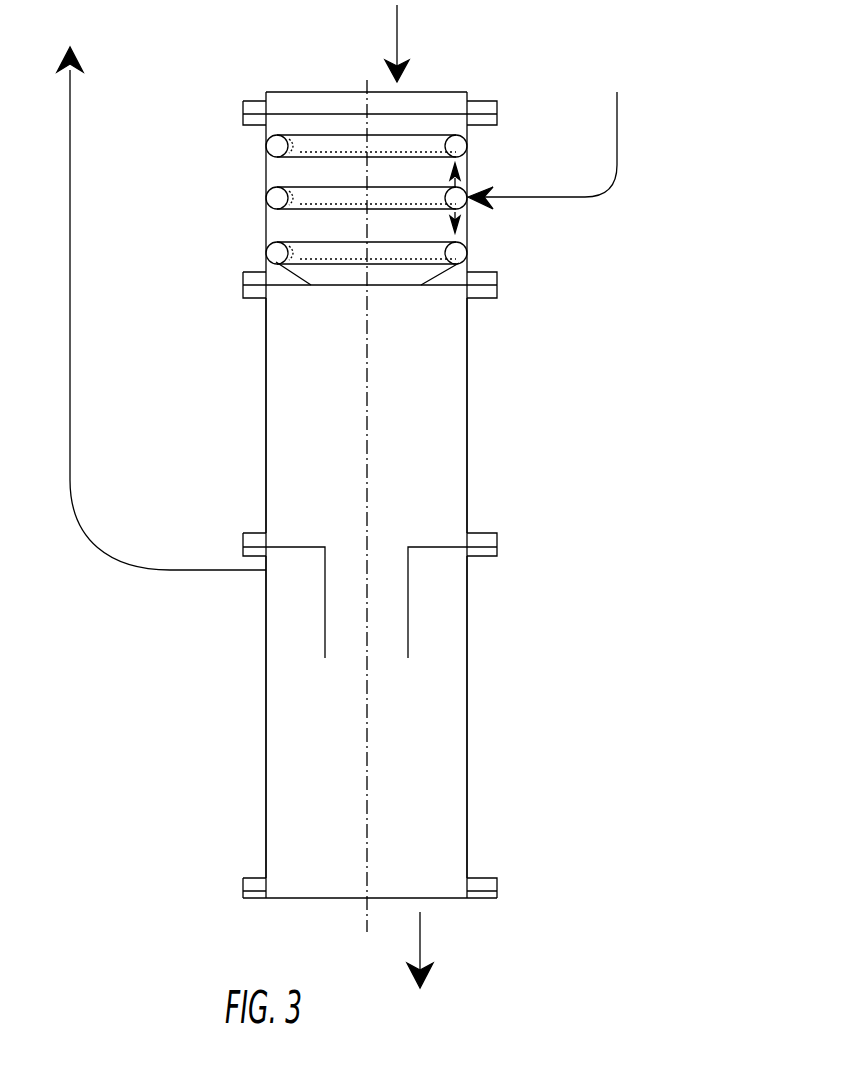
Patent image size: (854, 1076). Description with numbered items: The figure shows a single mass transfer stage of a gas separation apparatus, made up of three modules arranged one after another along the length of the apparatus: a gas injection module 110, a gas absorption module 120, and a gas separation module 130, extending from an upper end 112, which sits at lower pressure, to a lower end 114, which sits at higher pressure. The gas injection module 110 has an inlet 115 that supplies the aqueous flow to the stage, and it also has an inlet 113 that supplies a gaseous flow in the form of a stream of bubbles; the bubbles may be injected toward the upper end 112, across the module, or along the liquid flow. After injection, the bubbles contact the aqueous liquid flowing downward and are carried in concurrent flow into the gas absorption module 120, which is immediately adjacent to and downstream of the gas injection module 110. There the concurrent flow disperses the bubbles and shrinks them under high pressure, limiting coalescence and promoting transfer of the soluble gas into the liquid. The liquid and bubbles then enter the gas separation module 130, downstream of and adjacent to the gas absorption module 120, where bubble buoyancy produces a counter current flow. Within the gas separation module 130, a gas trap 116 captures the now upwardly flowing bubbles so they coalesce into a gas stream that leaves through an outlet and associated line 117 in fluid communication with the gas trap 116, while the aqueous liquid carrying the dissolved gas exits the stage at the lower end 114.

The gas injection module 110 is at (515, 113).
The upper end 112 is at (470, 95).
The inlet 113 is at (528, 198).
The lower end 114 is at (477, 899).
The inlet 115 is at (397, 42).
The gas trap 116 is at (295, 598).
The line 117 is at (202, 571).
The gas absorption module 120 is at (515, 285).
The gas separation module 130 is at (515, 892).